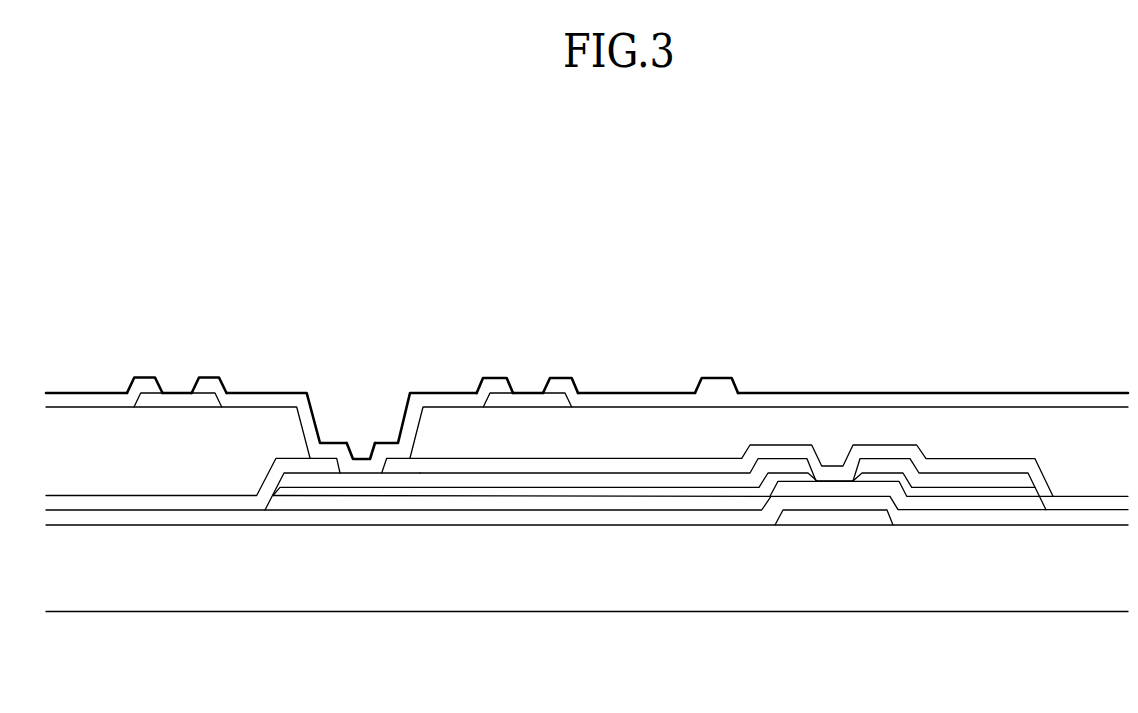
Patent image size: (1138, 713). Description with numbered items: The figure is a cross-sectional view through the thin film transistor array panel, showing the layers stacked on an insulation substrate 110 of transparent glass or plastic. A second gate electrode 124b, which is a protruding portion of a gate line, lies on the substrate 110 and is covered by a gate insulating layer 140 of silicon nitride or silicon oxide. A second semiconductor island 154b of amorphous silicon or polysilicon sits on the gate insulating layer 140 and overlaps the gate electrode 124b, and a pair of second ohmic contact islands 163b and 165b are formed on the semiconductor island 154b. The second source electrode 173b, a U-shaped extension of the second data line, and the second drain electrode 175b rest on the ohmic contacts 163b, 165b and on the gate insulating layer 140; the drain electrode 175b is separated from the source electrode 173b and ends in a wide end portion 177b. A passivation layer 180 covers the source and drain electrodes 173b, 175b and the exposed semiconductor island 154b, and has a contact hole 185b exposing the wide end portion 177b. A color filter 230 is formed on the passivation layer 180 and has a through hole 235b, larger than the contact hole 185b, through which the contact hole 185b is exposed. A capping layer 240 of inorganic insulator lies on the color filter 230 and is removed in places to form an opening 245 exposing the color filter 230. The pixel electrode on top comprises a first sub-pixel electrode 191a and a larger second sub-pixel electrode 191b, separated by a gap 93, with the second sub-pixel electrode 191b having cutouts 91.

The insulation substrate 110 is at (296, 594).
The second gate electrode 124b is at (835, 518).
The gate insulating layer 140 is at (187, 519).
The second semiconductor island 154b is at (467, 502).
The second ohmic contact island 163b is at (945, 492).
The second ohmic contact island 165b is at (518, 492).
The second source electrode 173b is at (977, 477).
The second drain electrode 175b is at (570, 477).
The wide end portion 177b is at (352, 474).
The passivation layer 180 is at (667, 465).
The contact hole 185b is at (338, 468).
The first sub-pixel electrode 191a is at (86, 401).
The second sub-pixel electrode 191b is at (283, 400).
The color filter 230 is at (970, 433).
The through hole 235b is at (303, 428).
The capping layer 240 is at (175, 400).
The opening 245 is at (221, 403).
The cutout 91 is at (540, 383).
The gap 93 is at (190, 383).